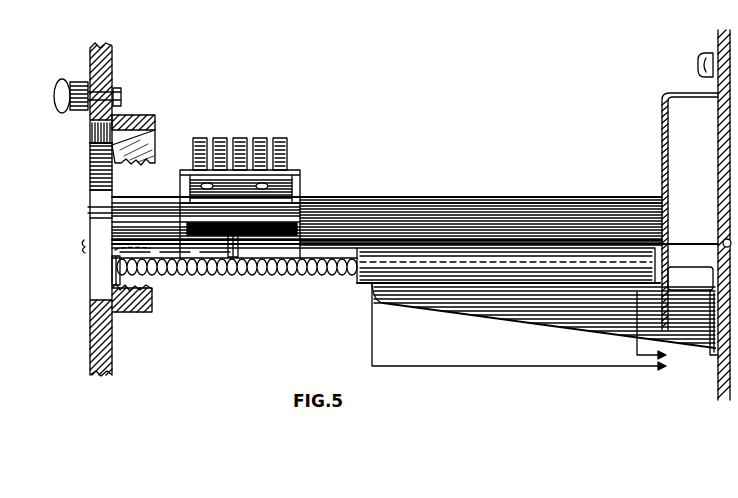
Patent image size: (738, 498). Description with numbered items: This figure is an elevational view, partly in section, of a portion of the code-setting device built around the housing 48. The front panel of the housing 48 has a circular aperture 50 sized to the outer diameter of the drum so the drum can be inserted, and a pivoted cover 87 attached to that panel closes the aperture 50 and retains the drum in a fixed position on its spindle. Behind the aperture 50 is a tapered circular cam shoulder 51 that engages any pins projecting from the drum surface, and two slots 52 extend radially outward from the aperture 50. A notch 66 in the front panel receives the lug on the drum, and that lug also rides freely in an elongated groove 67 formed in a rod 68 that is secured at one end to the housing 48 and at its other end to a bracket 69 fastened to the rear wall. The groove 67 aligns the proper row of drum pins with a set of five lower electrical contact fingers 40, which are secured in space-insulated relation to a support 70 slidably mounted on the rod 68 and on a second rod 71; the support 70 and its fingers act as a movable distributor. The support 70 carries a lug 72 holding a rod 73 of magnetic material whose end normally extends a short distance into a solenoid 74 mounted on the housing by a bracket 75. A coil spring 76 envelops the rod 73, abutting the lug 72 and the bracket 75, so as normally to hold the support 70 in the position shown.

The lower electrical contact fingers 40 is at (280, 138).
The housing 48 is at (117, 82).
The circular aperture 50 is at (100, 158).
The tapered circular cam shoulder 51 is at (151, 126).
The slots 52 is at (96, 135).
The notch 66 is at (100, 211).
The elongated groove 67 is at (160, 215).
The rod 68 is at (357, 200).
The bracket 69 is at (664, 92).
The support 70 is at (301, 190).
The rod 71 is at (380, 240).
The lug 72 is at (112, 272).
The rod of magnetic material 73 is at (218, 268).
The solenoid 74 is at (358, 276).
The bracket 75 is at (430, 304).
The coil spring 76 is at (167, 270).
The pivoted cover 87 is at (91, 78).